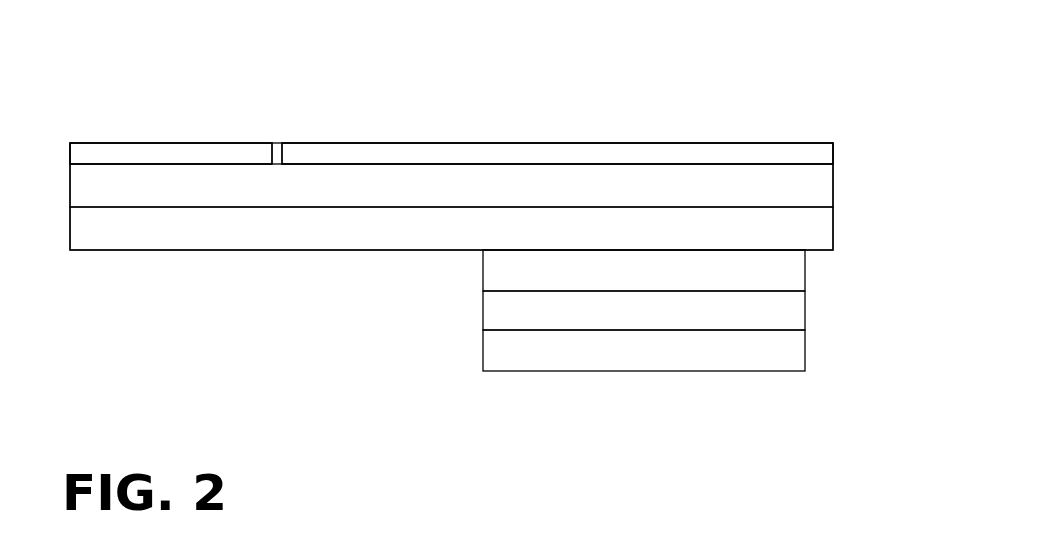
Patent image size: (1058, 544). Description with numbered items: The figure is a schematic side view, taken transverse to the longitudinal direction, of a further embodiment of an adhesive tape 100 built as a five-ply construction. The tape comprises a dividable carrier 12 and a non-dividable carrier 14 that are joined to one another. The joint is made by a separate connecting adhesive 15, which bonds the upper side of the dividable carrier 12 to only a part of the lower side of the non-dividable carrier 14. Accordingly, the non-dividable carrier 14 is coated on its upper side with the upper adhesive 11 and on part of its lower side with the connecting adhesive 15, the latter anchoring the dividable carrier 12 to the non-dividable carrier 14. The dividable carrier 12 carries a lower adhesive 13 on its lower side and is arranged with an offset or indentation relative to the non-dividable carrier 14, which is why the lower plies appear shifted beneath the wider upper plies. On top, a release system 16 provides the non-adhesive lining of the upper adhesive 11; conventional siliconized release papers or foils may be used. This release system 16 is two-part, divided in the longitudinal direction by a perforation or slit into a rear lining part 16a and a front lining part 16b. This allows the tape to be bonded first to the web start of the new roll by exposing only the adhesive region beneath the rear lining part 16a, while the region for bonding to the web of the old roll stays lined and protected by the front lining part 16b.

The adhesive tape 100 is at (104, 80).
The release system 16 is at (846, 140).
The rear lining part 16a is at (212, 150).
The front lining part 16b is at (558, 151).
The upper adhesive 11 is at (808, 184).
The non-dividable carrier 14 is at (808, 229).
The connecting adhesive 15 is at (788, 274).
The dividable carrier 12 is at (788, 314).
The lower adhesive 13 is at (788, 354).